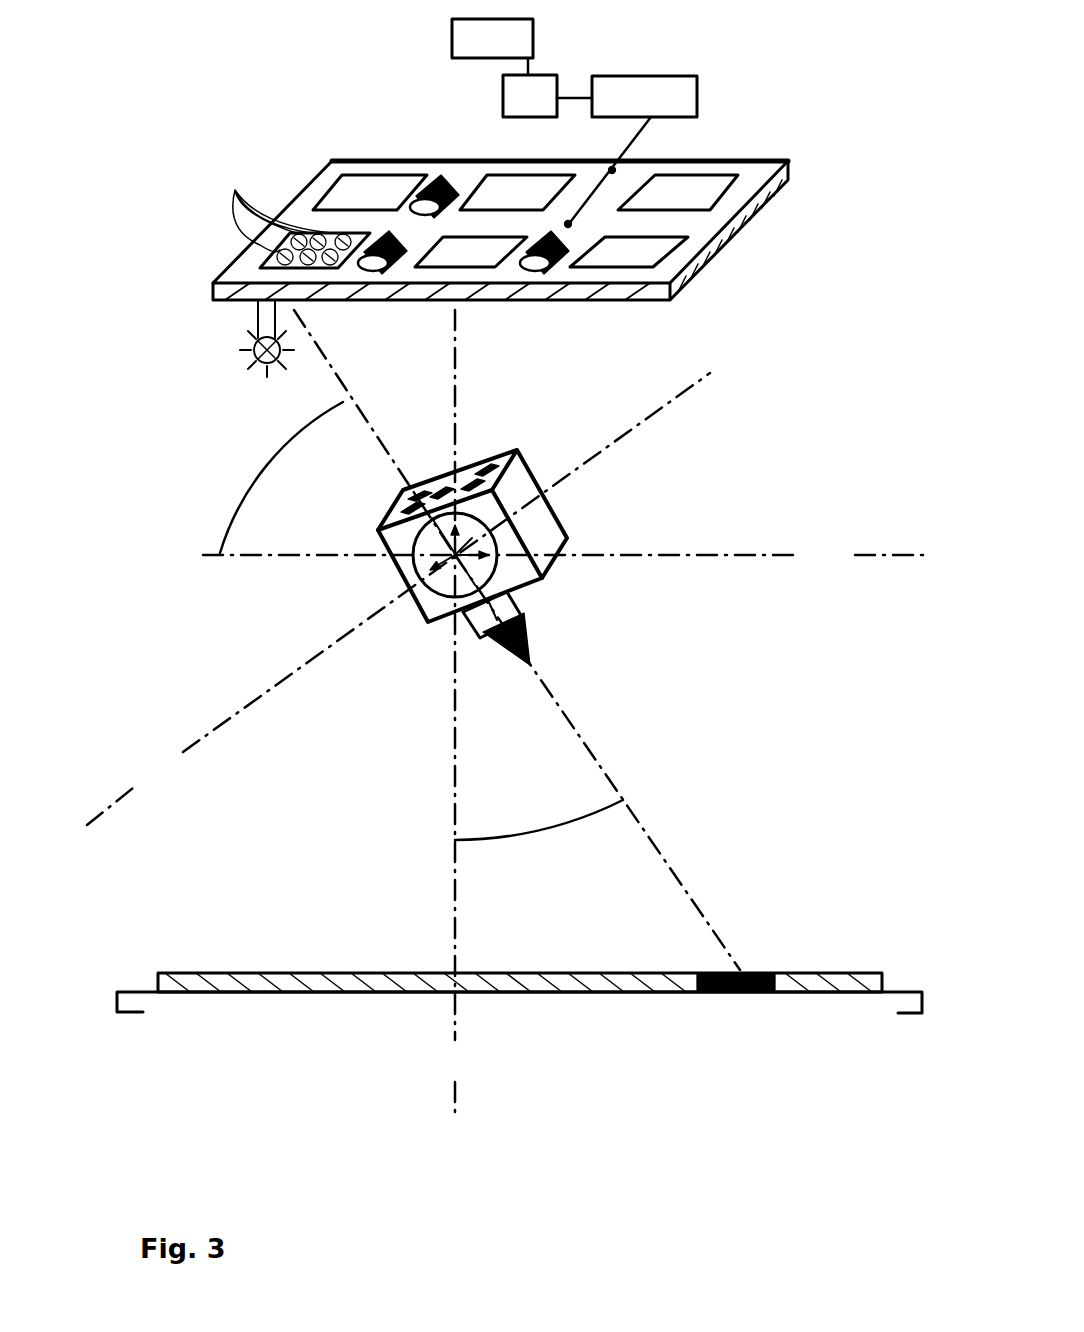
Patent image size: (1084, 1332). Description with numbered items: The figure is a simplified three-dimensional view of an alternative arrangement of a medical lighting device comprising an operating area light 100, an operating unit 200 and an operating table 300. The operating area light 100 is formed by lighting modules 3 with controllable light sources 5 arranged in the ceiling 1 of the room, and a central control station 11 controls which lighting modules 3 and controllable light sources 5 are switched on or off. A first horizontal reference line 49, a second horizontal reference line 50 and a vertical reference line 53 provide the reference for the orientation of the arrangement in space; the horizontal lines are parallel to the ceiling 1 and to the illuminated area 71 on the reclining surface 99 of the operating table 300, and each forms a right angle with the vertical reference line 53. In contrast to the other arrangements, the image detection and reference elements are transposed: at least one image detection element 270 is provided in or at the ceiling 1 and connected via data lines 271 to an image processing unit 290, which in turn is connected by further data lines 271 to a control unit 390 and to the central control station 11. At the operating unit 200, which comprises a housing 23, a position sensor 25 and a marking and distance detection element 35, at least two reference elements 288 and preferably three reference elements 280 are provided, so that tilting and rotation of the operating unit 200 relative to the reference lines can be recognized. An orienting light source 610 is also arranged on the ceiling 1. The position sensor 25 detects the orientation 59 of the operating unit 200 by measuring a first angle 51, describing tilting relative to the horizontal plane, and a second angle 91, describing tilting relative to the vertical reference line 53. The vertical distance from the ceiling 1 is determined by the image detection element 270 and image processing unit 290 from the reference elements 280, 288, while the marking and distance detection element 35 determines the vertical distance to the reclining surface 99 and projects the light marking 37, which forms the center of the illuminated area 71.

The ceiling of the room 1 is at (728, 238).
The lighting module 3 is at (343, 190).
The controllable light source 5 is at (235, 196).
The central control station 11 is at (463, 37).
The housing 23 is at (560, 505).
The position sensor 25 is at (540, 540).
The marking and distance detection element 35 is at (528, 652).
The light marking 37 is at (758, 971).
The first horizontal reference line X0 49 is at (810, 570).
The second horizontal reference line Z0 50 is at (163, 792).
The first angle phi1 51 is at (290, 457).
The vertical reference line Y0 53 is at (478, 1075).
The orientation 59 is at (640, 812).
The illuminated area X44 71 is at (857, 980).
The second angle phi2 91 is at (483, 810).
The reclining surface 99 is at (910, 1003).
The operating area light 100 is at (757, 150).
The operating unit 200 is at (188, 447).
The image detection element 270 is at (432, 182).
The data lines 271 is at (528, 65).
The reference elements 280 is at (440, 492).
The reference element 288 is at (472, 484).
The image processing unit 290 is at (687, 97).
The operating table 300 is at (714, 1095).
The control unit 390 is at (545, 76).
The orienting light source 610 is at (263, 323).